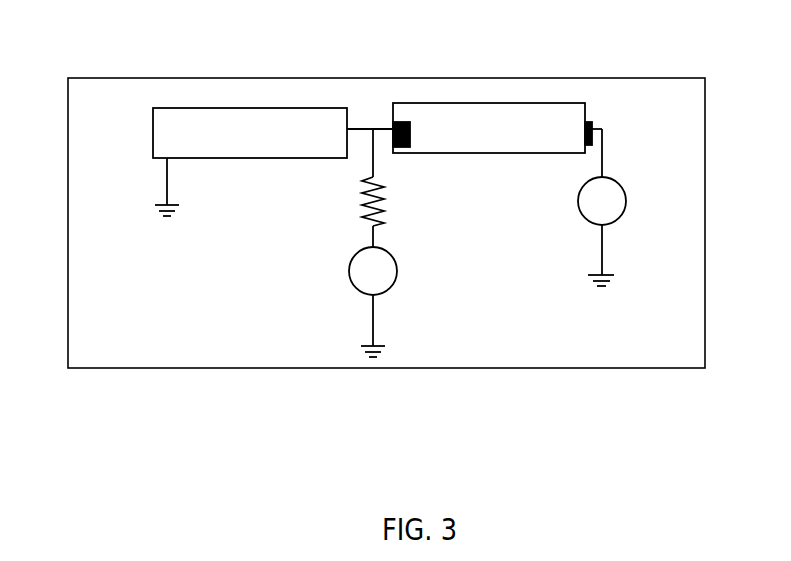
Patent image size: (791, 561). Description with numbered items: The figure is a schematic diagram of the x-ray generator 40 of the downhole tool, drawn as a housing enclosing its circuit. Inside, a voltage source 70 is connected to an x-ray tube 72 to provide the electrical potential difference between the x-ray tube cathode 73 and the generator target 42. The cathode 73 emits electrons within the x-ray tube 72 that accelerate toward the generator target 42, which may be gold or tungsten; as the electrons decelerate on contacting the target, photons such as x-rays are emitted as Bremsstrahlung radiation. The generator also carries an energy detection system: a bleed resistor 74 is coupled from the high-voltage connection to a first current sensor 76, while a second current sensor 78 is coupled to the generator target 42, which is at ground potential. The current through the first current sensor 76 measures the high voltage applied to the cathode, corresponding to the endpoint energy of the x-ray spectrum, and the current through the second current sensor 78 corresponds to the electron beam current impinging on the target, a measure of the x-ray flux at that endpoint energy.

The x-ray generator 40 is at (91, 76).
The voltage source 70 is at (193, 108).
The x-ray tube 72 is at (422, 103).
The cathode 73 is at (407, 145).
The generator target 42 is at (590, 122).
The bleed resistor 74 is at (362, 218).
The first current sensor 76 is at (388, 290).
The second current sensor 78 is at (620, 210).